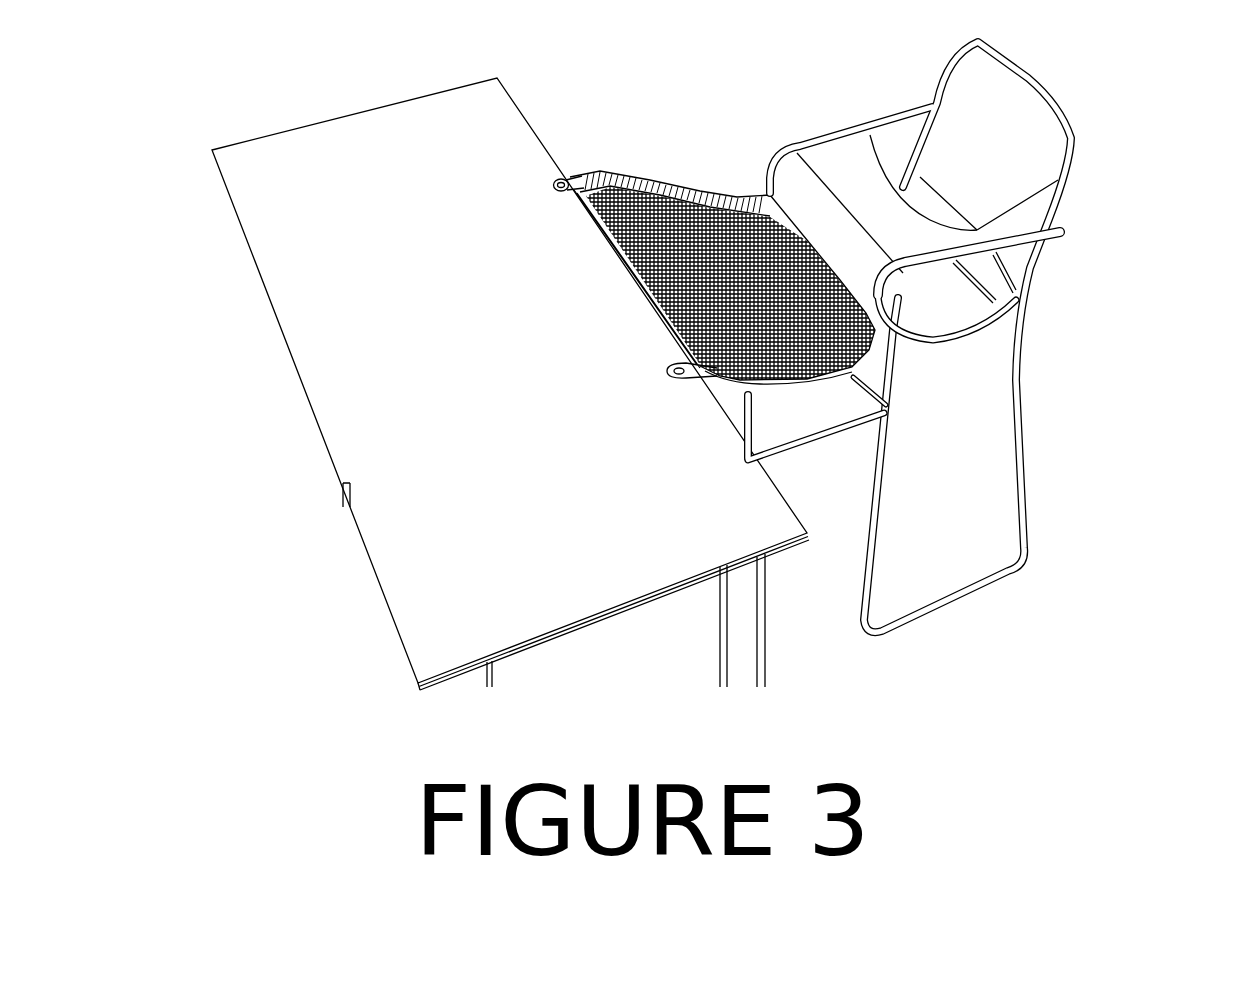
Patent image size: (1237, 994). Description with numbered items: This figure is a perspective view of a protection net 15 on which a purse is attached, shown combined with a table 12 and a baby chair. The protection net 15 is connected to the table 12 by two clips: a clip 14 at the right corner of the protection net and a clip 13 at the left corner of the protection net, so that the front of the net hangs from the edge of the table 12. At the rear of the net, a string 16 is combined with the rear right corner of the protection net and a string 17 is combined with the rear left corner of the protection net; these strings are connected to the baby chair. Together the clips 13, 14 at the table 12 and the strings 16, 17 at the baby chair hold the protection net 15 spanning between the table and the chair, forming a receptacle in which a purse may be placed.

The table 12 is at (292, 170).
The clip 13 is at (563, 176).
The clip 14 is at (688, 380).
The protection net 15 is at (717, 187).
The string 16 is at (953, 297).
The string 17 is at (888, 110).